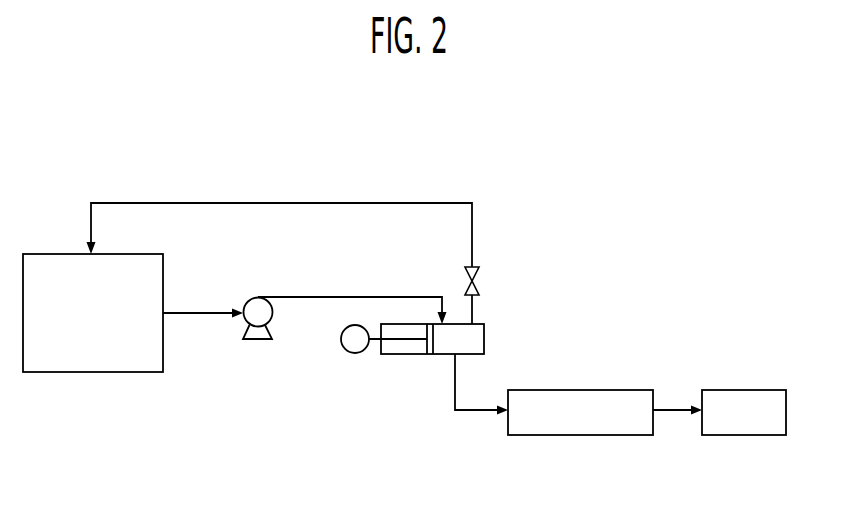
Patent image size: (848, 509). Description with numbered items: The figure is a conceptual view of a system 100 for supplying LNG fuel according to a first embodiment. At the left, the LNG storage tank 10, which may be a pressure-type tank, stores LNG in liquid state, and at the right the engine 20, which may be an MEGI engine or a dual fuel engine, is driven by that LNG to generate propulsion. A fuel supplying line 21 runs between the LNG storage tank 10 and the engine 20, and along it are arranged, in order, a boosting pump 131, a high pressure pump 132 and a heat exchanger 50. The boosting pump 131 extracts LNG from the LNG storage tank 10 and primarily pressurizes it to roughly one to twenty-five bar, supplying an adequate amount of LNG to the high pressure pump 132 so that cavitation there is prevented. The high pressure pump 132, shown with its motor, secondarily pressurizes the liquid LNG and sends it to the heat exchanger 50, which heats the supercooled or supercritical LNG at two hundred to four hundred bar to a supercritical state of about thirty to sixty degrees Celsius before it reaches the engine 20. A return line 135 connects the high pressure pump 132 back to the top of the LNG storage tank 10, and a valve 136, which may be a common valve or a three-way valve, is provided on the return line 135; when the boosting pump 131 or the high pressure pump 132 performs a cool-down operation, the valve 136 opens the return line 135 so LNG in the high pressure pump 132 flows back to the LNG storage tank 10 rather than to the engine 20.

The system for supplying LNG fuel 100 is at (647, 182).
The LNG storage tank 10 is at (60, 252).
The engine 20 is at (742, 388).
The fuel supplying line 21 is at (192, 314).
The heat exchanger 50 is at (595, 388).
The boosting pump 131 is at (255, 340).
The high pressure pump 132 is at (397, 356).
The return line 135 is at (292, 203).
The valve 136 is at (480, 277).